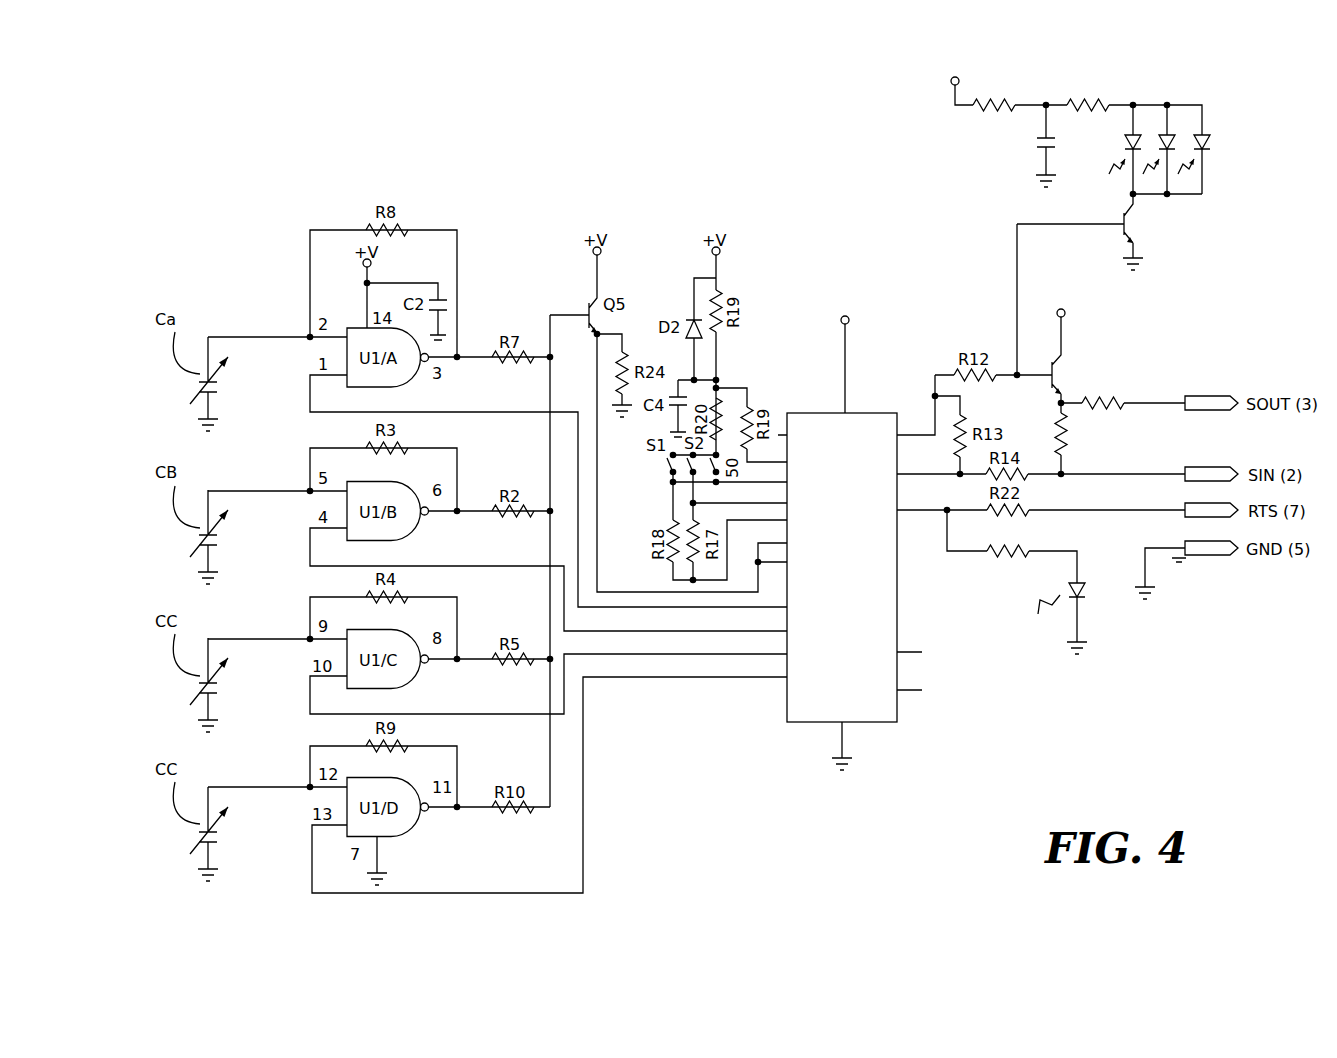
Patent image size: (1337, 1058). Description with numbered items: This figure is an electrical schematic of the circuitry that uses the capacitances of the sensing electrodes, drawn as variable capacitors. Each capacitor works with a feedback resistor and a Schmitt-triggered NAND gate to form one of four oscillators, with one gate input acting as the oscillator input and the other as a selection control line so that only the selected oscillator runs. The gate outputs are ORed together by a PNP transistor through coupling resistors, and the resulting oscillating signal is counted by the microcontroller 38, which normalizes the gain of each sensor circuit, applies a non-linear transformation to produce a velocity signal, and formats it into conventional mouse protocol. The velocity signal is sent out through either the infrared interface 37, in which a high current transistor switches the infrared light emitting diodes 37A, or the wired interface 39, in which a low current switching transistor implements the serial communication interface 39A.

The infrared (IR) interface 37 is at (970, 148).
The high-brightness infrared light emitting diodes 37A is at (1200, 212).
The microcontroller 38 is at (778, 705).
The wired interface 39 is at (1108, 627).
The serial RS-232 communication interface 39A is at (1130, 335).